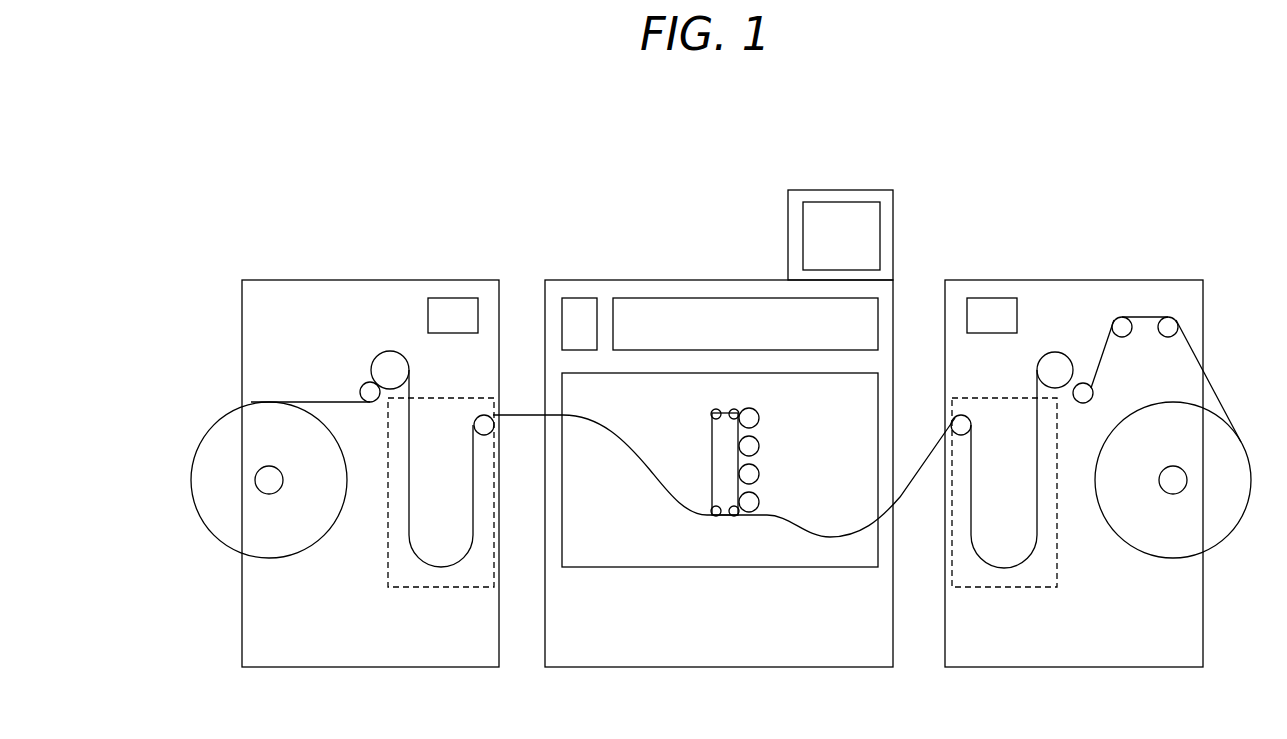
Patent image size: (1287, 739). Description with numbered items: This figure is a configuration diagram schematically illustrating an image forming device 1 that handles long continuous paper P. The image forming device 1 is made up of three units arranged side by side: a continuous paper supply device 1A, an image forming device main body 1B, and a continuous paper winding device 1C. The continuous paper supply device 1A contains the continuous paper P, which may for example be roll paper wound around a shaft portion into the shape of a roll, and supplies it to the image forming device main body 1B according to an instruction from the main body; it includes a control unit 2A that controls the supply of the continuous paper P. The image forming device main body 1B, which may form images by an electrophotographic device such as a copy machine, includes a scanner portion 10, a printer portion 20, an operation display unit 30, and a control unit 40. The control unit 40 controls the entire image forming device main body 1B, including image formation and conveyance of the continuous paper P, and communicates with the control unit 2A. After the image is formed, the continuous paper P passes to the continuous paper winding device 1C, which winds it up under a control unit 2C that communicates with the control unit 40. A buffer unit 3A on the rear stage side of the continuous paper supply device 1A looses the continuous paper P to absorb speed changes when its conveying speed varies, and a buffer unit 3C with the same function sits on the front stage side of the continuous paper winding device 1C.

The image forming device 1 is at (977, 146).
The continuous paper supply device 1A is at (1153, 280).
The image forming device main body 1B is at (648, 280).
The continuous paper winding device 1C is at (335, 280).
The control unit 2A is at (990, 298).
The control unit 2C is at (452, 298).
The buffer unit 3A is at (1003, 587).
The buffer unit 3C is at (440, 587).
The scanner portion 10 is at (737, 298).
The printer portion 20 is at (657, 567).
The operation display unit 30 is at (866, 190).
The control unit 40 is at (577, 298).
The continuous paper P is at (333, 400).